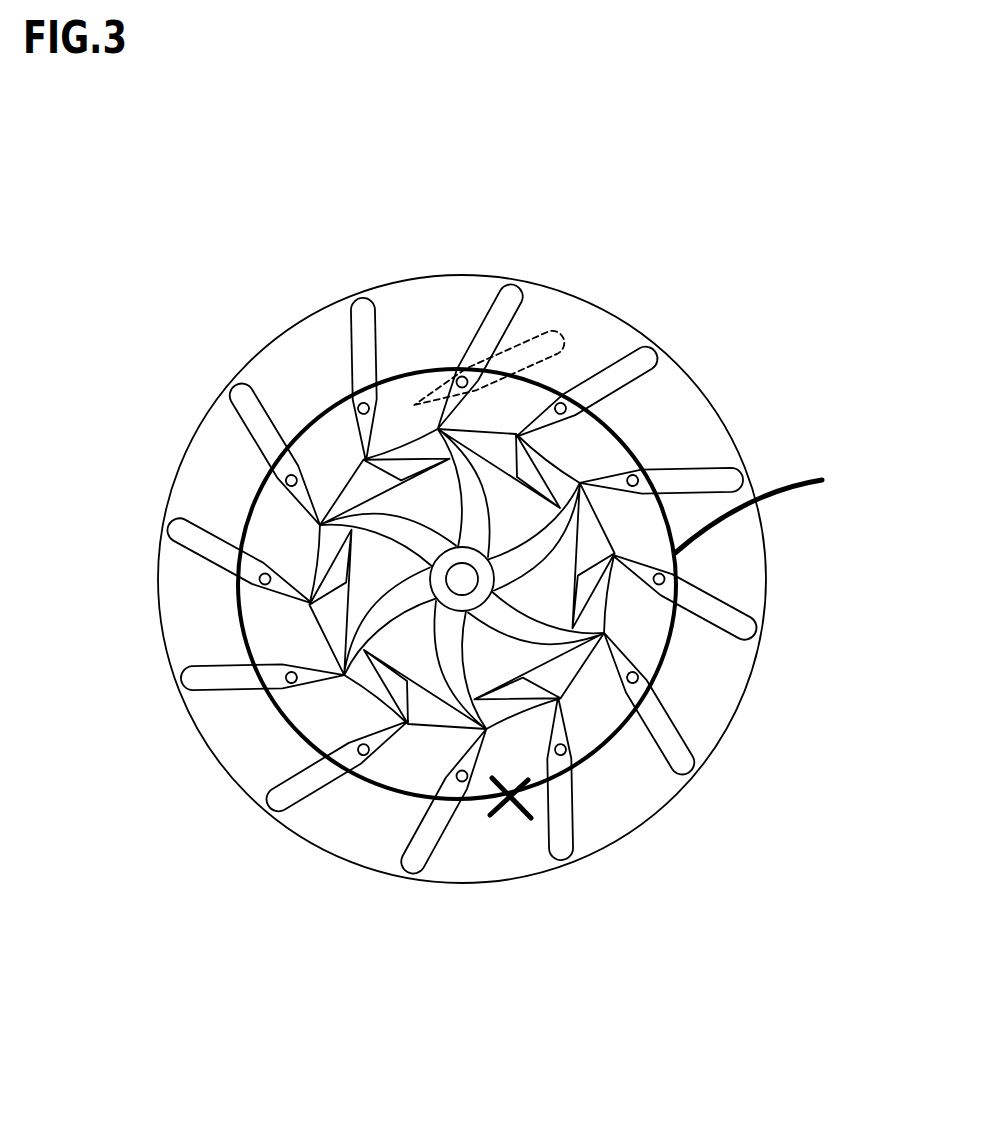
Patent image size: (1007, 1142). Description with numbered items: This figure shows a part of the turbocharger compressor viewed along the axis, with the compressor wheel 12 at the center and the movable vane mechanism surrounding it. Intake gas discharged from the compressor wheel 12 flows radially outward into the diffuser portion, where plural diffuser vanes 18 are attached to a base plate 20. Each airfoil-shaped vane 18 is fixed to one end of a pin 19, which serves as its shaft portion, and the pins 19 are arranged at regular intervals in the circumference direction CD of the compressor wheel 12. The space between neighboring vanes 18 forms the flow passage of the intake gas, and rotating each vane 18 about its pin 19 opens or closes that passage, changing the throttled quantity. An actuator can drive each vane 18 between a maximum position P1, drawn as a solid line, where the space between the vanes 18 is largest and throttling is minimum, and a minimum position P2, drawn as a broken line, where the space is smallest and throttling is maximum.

The compressor wheel 12 is at (370, 690).
The diffuser vane 18 is at (517, 290).
The pin 19 is at (458, 375).
The base plate 20 is at (683, 398).
The maximum position P1 is at (503, 298).
The minimum position P2 is at (560, 325).
The circumference direction CD is at (558, 593).